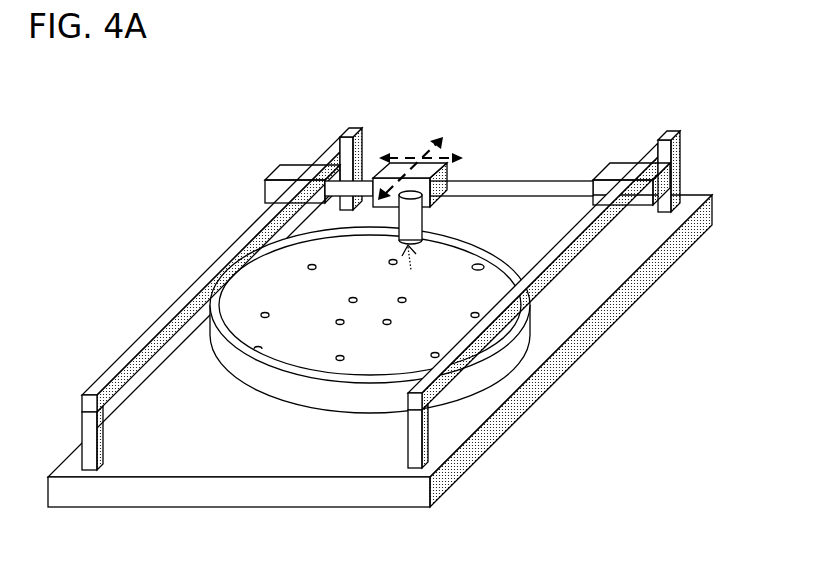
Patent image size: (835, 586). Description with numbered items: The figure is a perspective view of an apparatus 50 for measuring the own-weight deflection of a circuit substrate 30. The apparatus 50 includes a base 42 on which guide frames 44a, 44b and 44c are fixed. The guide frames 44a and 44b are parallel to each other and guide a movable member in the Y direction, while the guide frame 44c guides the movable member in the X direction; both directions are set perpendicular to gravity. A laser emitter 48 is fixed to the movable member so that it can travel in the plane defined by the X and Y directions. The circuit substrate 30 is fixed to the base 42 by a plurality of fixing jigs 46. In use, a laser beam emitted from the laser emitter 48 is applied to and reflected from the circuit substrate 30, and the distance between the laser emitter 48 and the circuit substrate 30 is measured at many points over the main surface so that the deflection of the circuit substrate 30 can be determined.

The circuit substrate 30 is at (330, 347).
The base 42 is at (593, 293).
The guide frame 44a is at (233, 242).
The guide frame 44b is at (580, 225).
The guide frame 44c is at (558, 183).
The fixing jig 46 is at (518, 355).
The laser emitter 48 is at (423, 232).
The apparatus for measuring own-weight deflection 50 is at (504, 90).